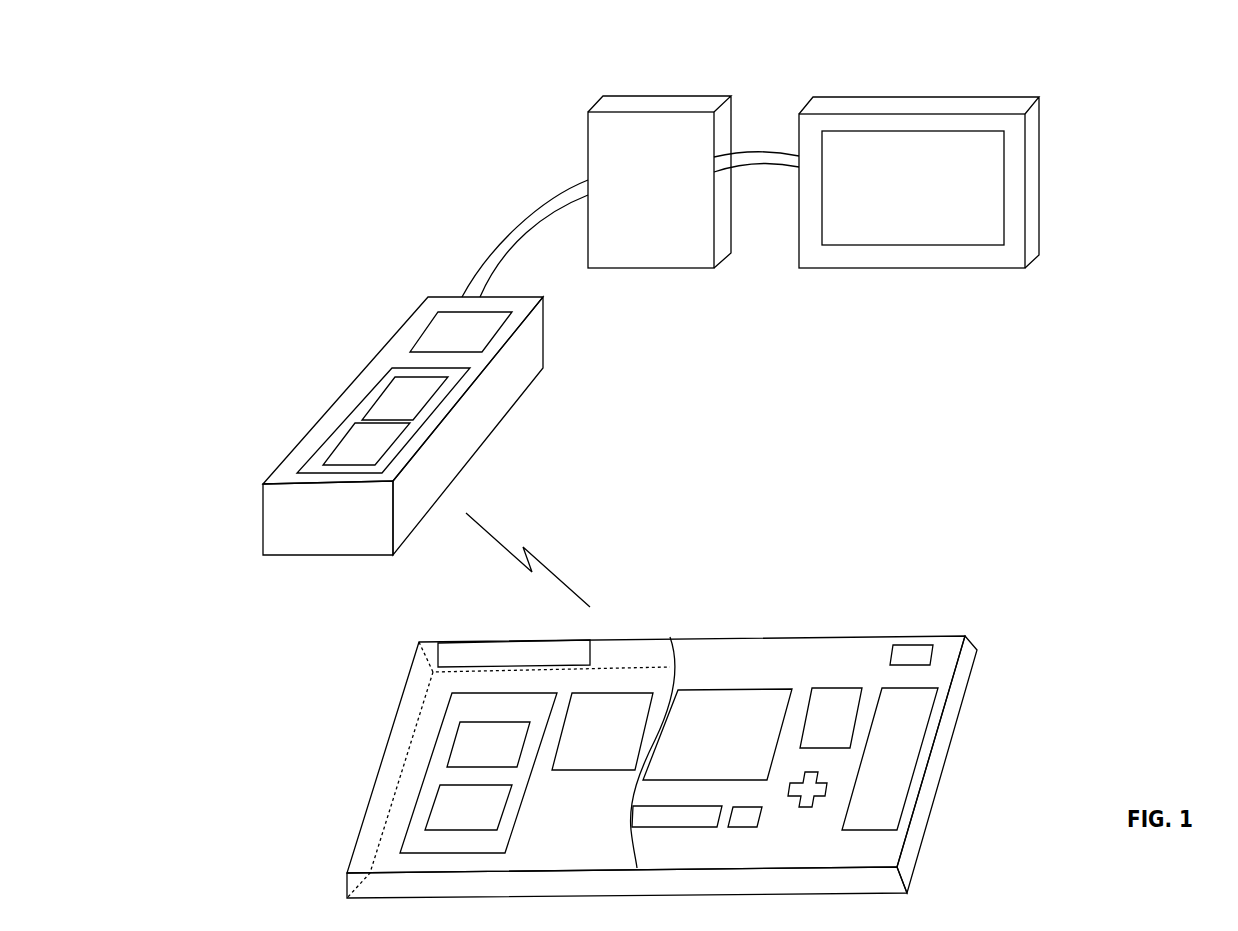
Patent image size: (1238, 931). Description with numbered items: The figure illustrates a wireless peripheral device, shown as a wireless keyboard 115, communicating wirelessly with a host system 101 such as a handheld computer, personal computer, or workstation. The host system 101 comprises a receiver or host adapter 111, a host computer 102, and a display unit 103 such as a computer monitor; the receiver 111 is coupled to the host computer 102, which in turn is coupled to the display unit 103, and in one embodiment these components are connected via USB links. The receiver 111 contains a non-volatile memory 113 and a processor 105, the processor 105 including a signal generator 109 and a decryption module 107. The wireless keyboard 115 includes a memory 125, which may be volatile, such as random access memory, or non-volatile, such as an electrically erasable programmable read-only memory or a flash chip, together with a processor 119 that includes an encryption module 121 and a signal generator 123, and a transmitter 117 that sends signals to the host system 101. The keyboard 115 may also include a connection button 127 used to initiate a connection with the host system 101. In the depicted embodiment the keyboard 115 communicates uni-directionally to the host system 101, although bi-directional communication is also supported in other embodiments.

The host system 101 is at (497, 113).
The host computer 102 is at (702, 93).
The display unit 103 is at (1013, 93).
The processor 105 is at (362, 400).
The decryption module 107 is at (400, 387).
The signal generator 109 is at (342, 452).
The receiver 111 is at (493, 423).
The non-volatile memory 113 is at (447, 320).
The wireless keyboard 115 is at (277, 681).
The transmitter 117 is at (448, 652).
The processor 119 is at (448, 727).
The encryption module 121 is at (457, 753).
The signal generator 123 is at (445, 810).
The memory 125 is at (607, 703).
The connection button 127 is at (920, 652).